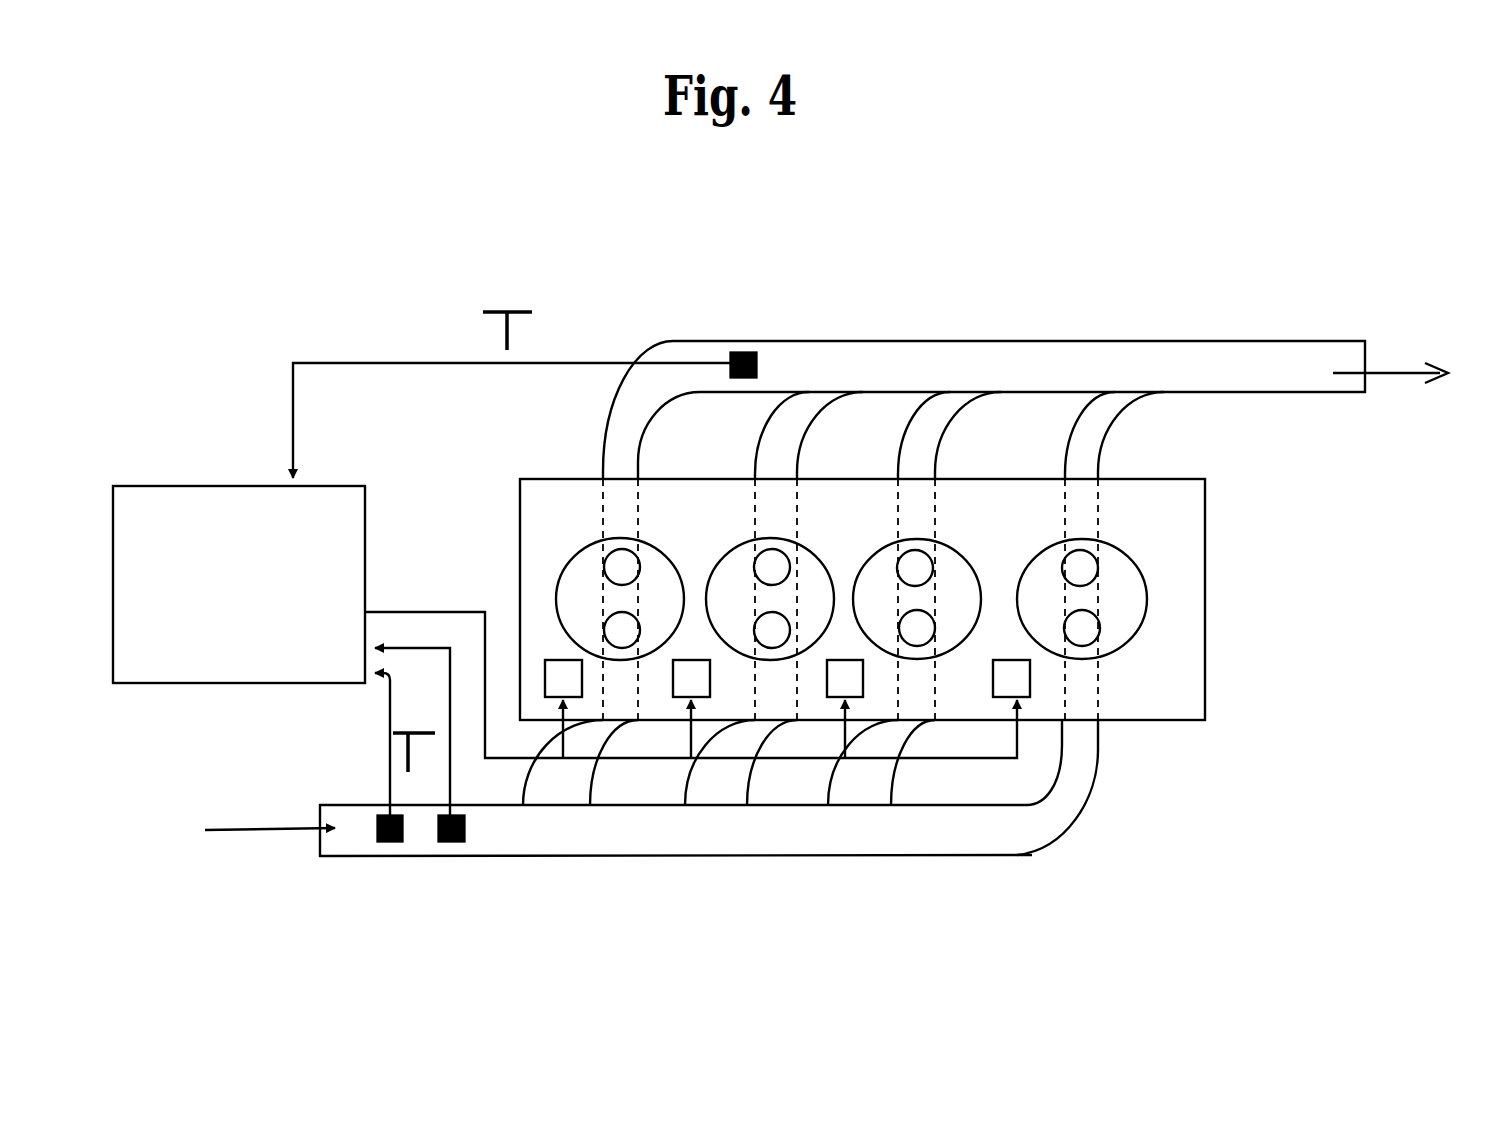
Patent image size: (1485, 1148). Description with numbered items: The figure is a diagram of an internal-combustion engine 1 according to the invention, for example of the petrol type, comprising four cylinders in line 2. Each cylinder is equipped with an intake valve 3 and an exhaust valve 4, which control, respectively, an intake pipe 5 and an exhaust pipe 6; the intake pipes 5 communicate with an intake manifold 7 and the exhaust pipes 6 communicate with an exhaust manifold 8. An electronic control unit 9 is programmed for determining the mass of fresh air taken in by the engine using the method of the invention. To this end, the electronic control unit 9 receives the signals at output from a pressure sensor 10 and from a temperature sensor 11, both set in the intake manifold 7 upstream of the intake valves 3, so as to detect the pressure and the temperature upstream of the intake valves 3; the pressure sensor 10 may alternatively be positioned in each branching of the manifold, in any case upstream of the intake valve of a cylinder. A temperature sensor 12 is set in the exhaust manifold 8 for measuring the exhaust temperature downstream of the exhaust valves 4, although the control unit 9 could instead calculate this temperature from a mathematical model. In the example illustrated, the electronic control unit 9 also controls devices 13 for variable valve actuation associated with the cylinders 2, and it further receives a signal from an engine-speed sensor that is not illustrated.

The internal-combustion engine 1 is at (1214, 548).
The cylinders 2 is at (564, 568).
The intake valve 3 is at (607, 627).
The exhaust valve 4 is at (615, 562).
The intake pipe 5 is at (608, 775).
The exhaust pipe 6 is at (625, 447).
The intake manifold 7 is at (672, 838).
The exhaust manifold 8 is at (918, 364).
The electronic control unit 9 is at (172, 510).
The pressure sensor 10 is at (390, 850).
The temperature sensor 11 is at (450, 850).
The temperature sensor 12 is at (755, 346).
The devices for variable valve actuation 13 is at (557, 671).